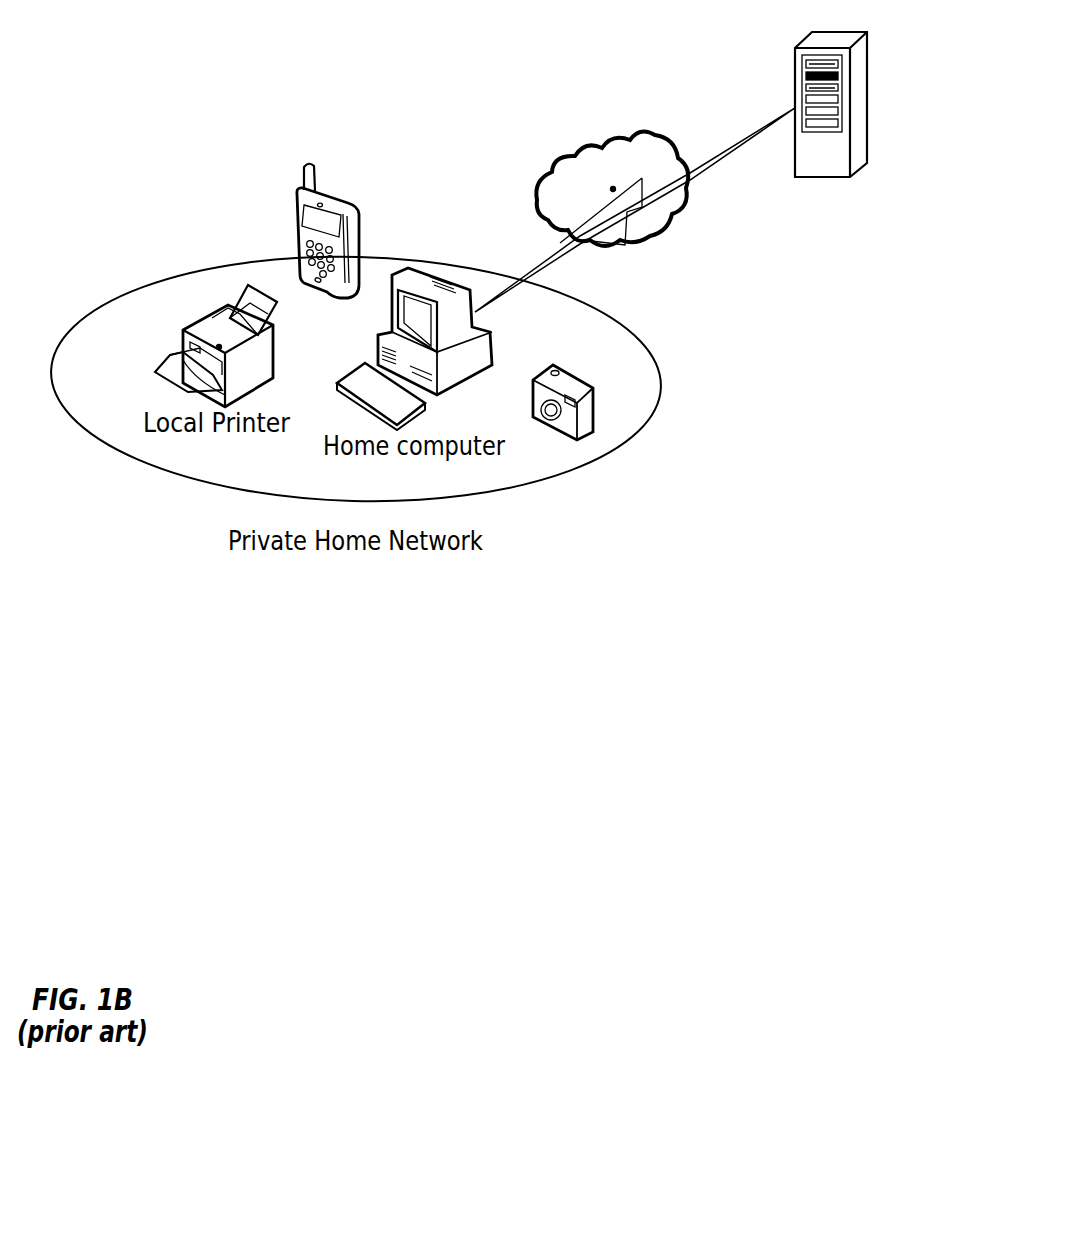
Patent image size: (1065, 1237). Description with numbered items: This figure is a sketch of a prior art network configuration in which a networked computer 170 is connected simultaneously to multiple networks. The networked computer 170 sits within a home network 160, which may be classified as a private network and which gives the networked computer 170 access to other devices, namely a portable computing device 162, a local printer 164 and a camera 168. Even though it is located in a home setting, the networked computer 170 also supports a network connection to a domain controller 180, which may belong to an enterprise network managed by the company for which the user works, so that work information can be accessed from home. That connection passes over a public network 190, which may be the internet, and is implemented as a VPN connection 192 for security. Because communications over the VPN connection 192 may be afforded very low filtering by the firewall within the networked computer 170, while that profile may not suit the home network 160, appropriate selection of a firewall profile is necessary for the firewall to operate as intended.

The home network 160 is at (650, 394).
The portable computing device 162 is at (335, 188).
The local printer 164 is at (195, 322).
The camera 168 is at (580, 380).
The networked computer 170 is at (450, 272).
The domain controller 180 is at (868, 92).
The public network 190 is at (636, 130).
The VPN connection 192 is at (692, 222).